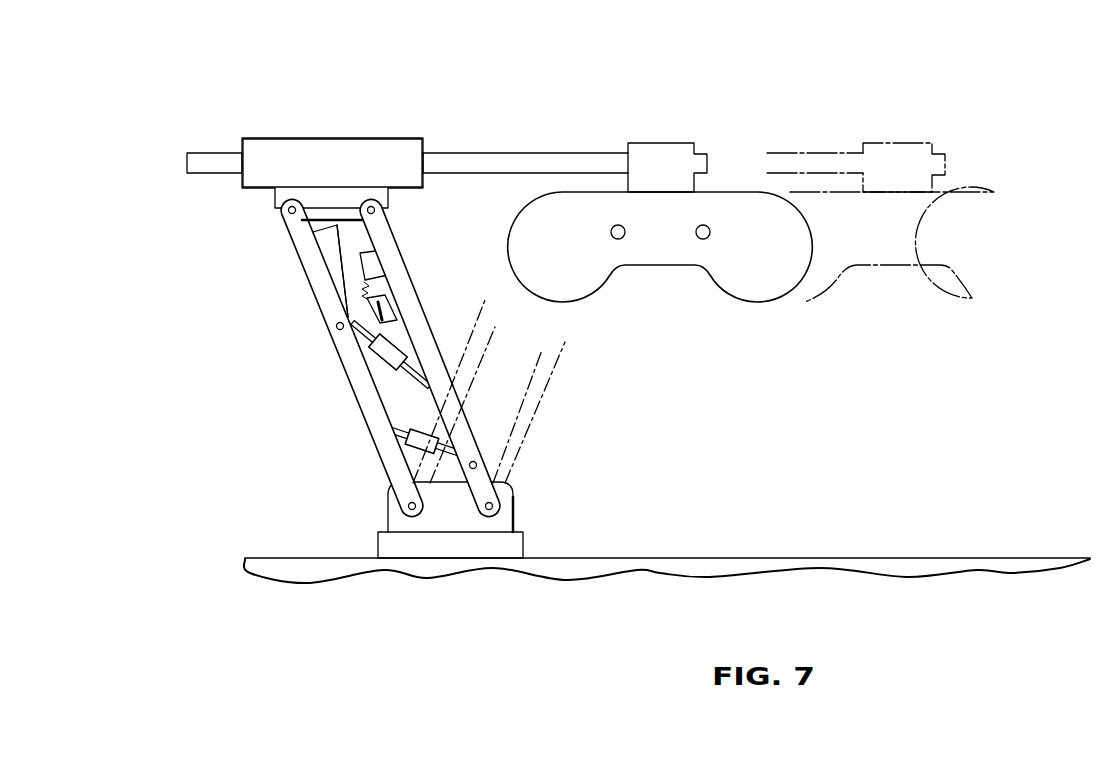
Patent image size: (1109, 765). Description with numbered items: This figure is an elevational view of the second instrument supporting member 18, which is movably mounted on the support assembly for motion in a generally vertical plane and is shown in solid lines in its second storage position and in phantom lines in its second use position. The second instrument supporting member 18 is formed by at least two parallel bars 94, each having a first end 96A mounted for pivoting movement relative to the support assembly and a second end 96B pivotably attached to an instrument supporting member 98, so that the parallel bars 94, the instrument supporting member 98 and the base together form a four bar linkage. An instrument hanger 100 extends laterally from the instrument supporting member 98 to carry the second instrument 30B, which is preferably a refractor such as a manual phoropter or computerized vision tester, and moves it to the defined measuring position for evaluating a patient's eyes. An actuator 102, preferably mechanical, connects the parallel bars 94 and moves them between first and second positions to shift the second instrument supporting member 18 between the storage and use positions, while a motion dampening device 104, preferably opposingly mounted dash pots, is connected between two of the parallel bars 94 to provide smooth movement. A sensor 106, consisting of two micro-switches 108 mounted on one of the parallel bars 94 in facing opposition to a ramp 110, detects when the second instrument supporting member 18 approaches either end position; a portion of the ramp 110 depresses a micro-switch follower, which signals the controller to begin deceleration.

The second instrument supporting member 18 is at (420, 132).
The instrument supporting member 98 is at (371, 142).
The instrument hanger 100 is at (555, 153).
The second instrument 30B is at (728, 205).
The second end 96B is at (364, 202).
The first end 96A is at (487, 512).
The parallel bars 94 is at (367, 393).
The sensor 106 is at (330, 252).
The micro-switches 108 is at (397, 310).
The ramp 110 is at (340, 283).
The actuator 102 is at (367, 352).
The motion dampening device 104 is at (400, 456).